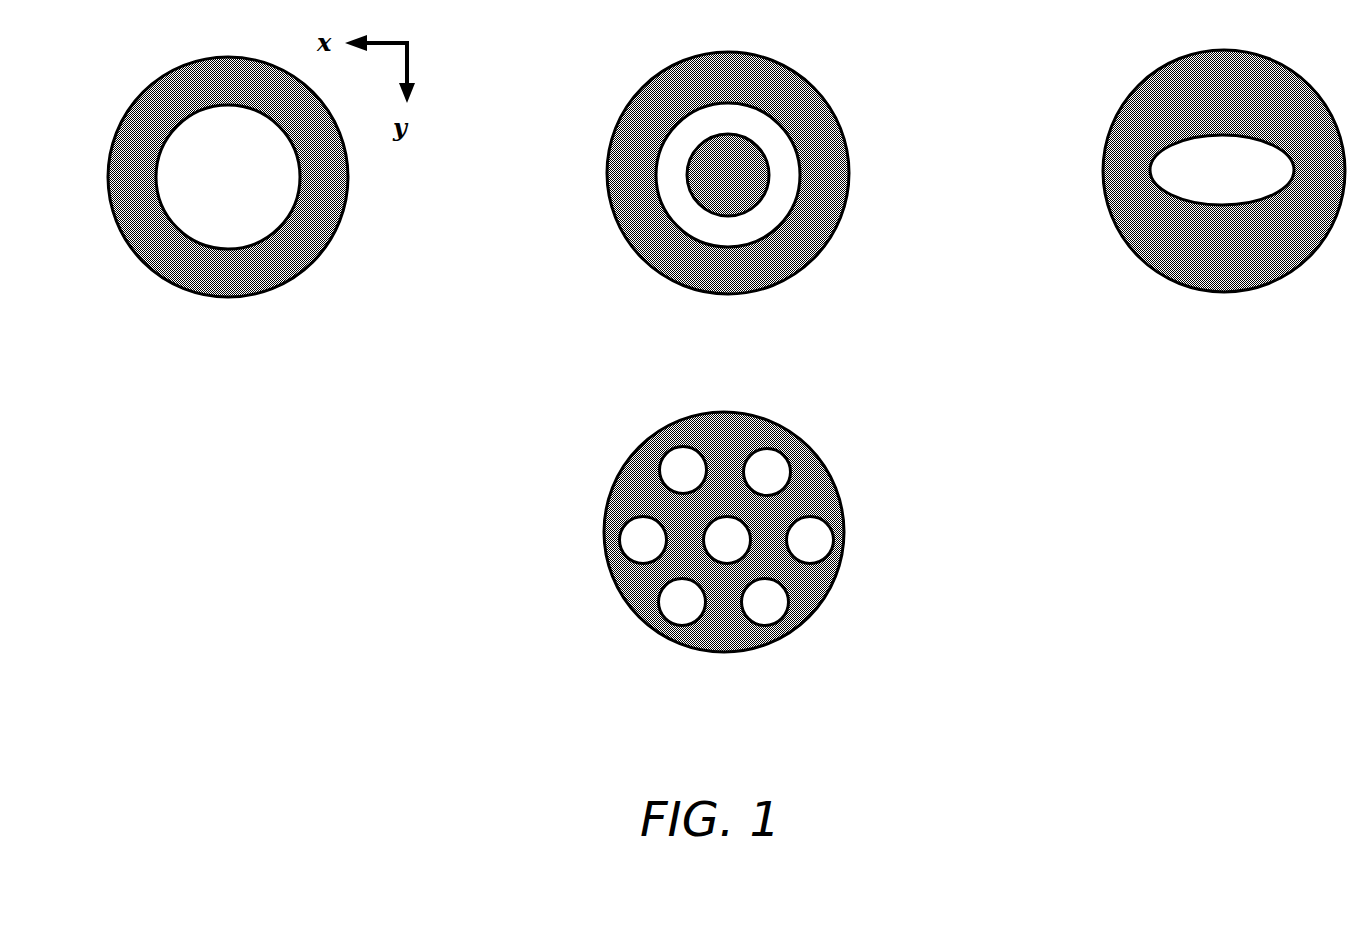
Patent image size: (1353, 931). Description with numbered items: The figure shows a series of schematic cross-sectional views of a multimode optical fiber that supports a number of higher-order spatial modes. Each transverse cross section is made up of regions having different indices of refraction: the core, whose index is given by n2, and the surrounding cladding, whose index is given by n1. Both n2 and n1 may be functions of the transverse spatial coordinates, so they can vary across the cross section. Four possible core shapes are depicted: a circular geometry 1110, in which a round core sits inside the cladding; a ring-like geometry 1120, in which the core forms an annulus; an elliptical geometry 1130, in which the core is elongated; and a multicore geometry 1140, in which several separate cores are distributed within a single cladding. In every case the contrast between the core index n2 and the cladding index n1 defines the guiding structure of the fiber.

The circular geometry 1110 is at (228, 204).
The ring-like geometry 1120 is at (728, 201).
The elliptical geometry 1130 is at (1224, 199).
The multicore geometry 1140 is at (724, 561).
The cladding index of refraction n1 is at (138, 132).
The core index of refraction n2 is at (198, 212).